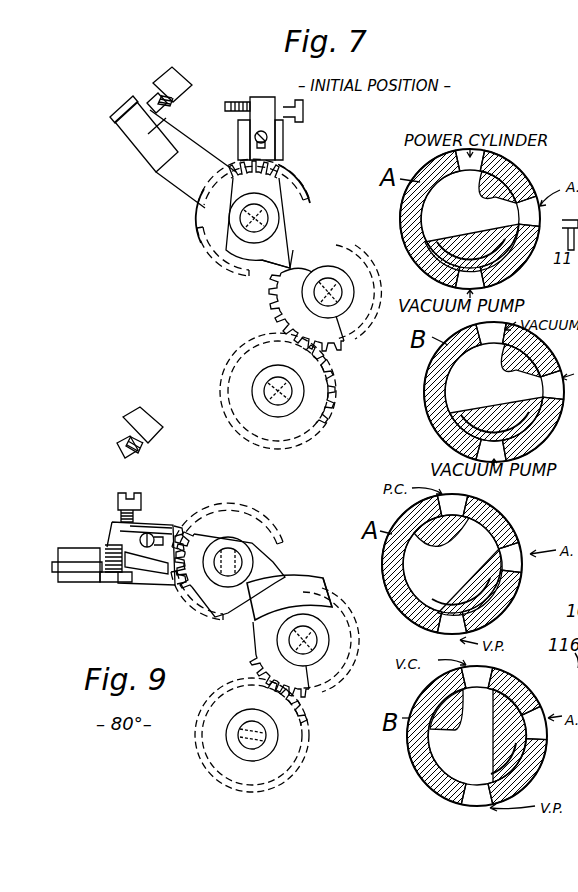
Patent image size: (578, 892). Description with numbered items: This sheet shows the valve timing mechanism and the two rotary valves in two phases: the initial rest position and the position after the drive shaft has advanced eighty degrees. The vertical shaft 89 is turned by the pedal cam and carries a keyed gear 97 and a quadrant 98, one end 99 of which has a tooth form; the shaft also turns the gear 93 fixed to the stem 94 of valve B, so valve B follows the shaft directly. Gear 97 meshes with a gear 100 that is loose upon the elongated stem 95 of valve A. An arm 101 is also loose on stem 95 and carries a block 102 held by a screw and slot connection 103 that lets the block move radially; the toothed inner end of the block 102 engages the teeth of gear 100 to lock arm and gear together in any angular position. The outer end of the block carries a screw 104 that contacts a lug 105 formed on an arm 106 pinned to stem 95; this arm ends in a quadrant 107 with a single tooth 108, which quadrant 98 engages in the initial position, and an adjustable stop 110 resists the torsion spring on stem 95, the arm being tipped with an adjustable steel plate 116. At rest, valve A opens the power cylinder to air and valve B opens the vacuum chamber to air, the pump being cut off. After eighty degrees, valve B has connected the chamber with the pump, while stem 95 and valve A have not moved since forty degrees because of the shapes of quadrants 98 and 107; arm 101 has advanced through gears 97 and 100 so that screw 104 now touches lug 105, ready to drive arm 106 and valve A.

In FIG. 7, the adjustable stop 110 is at (160, 90).
In FIG. 9, the adjustable stop 110 is at (124, 430).
In FIG. 7, the adjustable steel plate 116 is at (116, 112).
In FIG. 9, the adjustable steel plate 116 is at (57, 562).
In FIG. 7, the block 102 is at (257, 96).
In FIG. 9, the block 102 is at (150, 535).
In FIG. 7, the screw 104 is at (240, 105).
In FIG. 9, the screw 104 is at (118, 501).
In FIG. 7, the screw and slot connection 103 is at (277, 130).
In FIG. 9, the screw and slot connection 103 is at (150, 535).
In FIG. 7, the arm 101 is at (268, 162).
In FIG. 9, the arm 101 is at (157, 538).
In FIG. 7, the lug 105 is at (150, 163).
In FIG. 9, the lug 105 is at (115, 584).
In FIG. 7, the arm 106 is at (180, 180).
In FIG. 9, the arm 106 is at (163, 582).
In FIG. 7, the gear 100 is at (226, 214).
In FIG. 9, the gear 100 is at (240, 514).
In FIG. 7, the quadrant 107 is at (238, 258).
In FIG. 9, the quadrant 107 is at (236, 613).
In FIG. 7, the stem 95 is at (262, 210).
In FIG. 9, the stem 95 is at (238, 556).
In FIG. 7, the tooth 108 is at (292, 262).
In FIG. 9, the tooth 108 is at (283, 580).
In FIG. 7, the shaft 89 is at (325, 296).
In FIG. 9, the shaft 89 is at (318, 640).
In FIG. 7, the tooth-form end 99 is at (275, 285).
In FIG. 9, the tooth-form end 99 is at (333, 583).
In FIG. 7, the quadrant 98 is at (268, 307).
In FIG. 9, the quadrant 98 is at (258, 620).
In FIG. 7, the gear 97 is at (348, 337).
In FIG. 9, the gear 97 is at (336, 673).
In FIG. 7, the gear 93 is at (232, 386).
In FIG. 9, the gear 93 is at (283, 770).
In FIG. 7, the stem 94 is at (290, 393).
In FIG. 9, the stem 94 is at (262, 743).